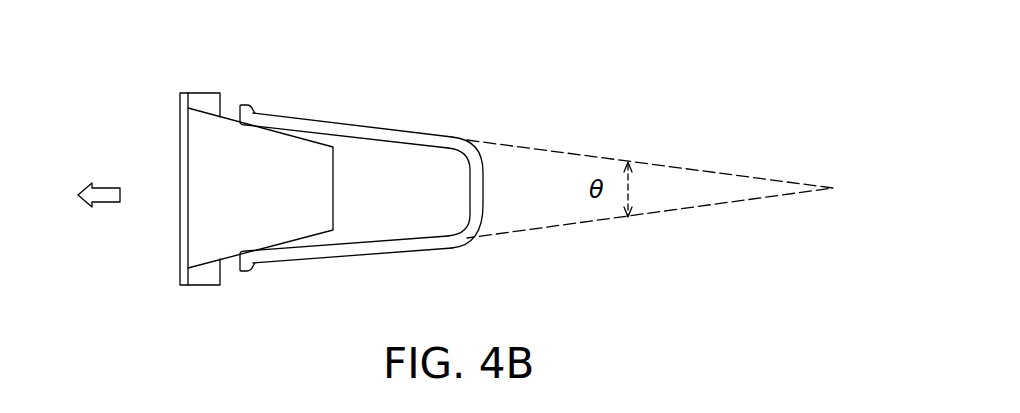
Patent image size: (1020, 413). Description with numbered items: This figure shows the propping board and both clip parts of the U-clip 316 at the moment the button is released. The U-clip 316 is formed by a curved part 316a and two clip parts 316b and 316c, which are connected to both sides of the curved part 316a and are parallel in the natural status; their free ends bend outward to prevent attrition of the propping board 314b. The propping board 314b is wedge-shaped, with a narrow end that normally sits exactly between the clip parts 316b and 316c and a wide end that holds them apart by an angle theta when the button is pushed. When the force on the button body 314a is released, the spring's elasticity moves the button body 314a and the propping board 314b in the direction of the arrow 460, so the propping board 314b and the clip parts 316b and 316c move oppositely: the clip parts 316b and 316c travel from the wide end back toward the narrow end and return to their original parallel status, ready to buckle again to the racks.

The button body 314a is at (186, 108).
The propping board 314b is at (225, 133).
The U-clip 316 is at (399, 190).
The curved part 316a is at (478, 222).
The clip part 316b is at (393, 249).
The clip part 316c is at (405, 132).
The arrow 460 is at (105, 196).